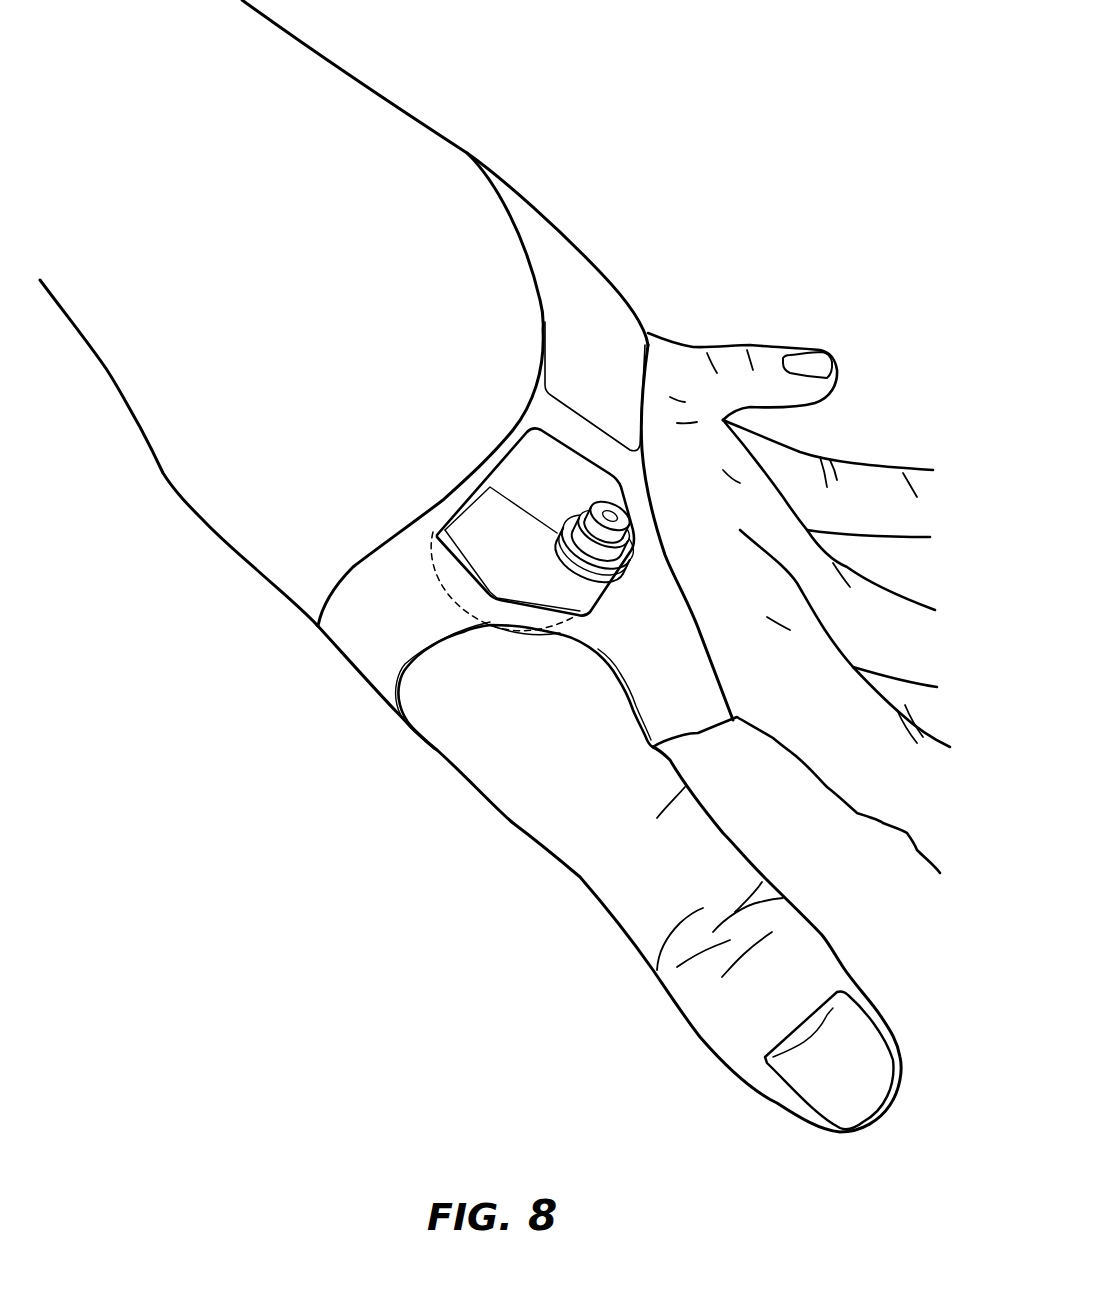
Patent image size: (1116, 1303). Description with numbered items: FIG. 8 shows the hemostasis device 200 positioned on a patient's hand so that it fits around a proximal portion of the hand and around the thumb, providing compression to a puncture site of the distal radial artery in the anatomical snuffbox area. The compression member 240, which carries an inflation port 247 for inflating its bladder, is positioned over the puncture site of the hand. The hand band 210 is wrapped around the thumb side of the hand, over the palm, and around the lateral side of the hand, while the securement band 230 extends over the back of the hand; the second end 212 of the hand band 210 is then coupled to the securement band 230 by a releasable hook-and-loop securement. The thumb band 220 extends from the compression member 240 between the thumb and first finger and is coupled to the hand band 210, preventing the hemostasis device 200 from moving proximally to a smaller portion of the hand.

The hemostasis device 200 is at (588, 180).
The hand band 210 is at (347, 660).
The second end 212 is at (605, 320).
The thumb band 220 is at (698, 733).
The securement band 230 is at (653, 370).
The compression member 240 is at (445, 558).
The inflation port 247 is at (607, 553).